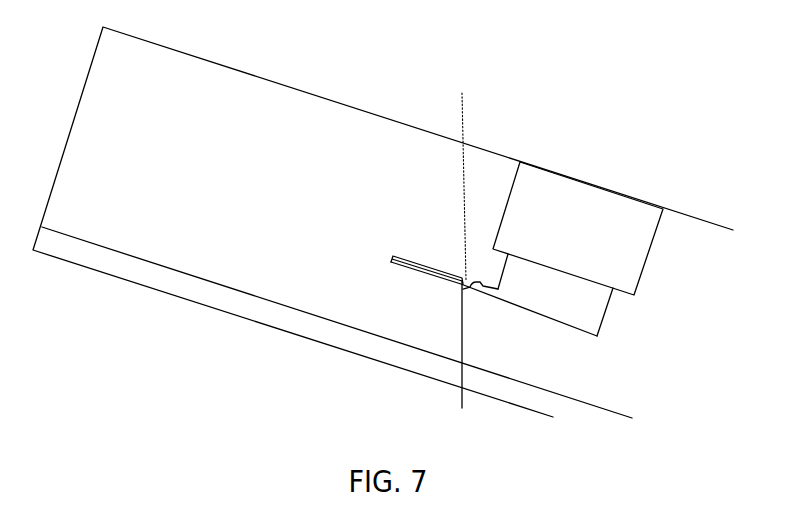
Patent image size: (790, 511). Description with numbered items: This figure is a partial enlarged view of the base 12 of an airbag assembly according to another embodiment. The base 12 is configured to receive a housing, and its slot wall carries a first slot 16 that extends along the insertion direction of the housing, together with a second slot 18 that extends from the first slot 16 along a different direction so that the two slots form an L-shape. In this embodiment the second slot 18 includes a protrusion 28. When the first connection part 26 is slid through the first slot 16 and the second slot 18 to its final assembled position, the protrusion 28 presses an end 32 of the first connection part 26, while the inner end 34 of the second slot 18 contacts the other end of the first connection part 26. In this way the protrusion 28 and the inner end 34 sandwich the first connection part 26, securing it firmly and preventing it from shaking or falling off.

The base 12 is at (572, 110).
The first slot 16 is at (577, 302).
The second slot 18 is at (483, 292).
The first connection part 26 is at (418, 279).
The protrusion 28 is at (463, 177).
The end 32 is at (463, 357).
The inner end 34 is at (392, 258).